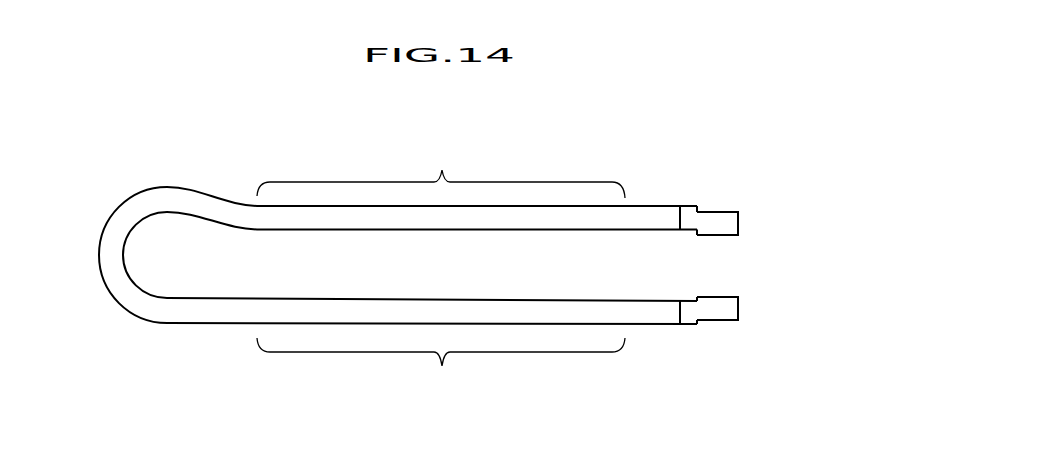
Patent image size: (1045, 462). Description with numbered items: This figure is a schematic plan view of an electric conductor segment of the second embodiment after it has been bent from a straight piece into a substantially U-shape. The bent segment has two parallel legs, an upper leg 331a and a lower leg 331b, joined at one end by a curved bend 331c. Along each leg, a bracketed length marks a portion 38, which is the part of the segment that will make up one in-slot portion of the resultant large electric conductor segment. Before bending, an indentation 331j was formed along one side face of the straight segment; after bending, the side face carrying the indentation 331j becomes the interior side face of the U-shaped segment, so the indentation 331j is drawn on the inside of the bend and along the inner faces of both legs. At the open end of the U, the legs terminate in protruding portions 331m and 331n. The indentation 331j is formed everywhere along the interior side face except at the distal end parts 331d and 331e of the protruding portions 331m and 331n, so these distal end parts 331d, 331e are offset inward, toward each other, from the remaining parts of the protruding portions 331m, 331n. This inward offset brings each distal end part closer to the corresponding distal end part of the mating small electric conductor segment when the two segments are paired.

The upper arm portion 331a is at (335, 218).
The lower arm portion 331b is at (337, 312).
The bent portion 331c is at (118, 280).
The distal end part 331d is at (740, 229).
The distal end part 331e is at (740, 319).
The indentation 331j is at (123, 260).
The protruding portion 331m is at (663, 206).
The protruding portion 331n is at (663, 324).
The portion 38 is at (441, 273).